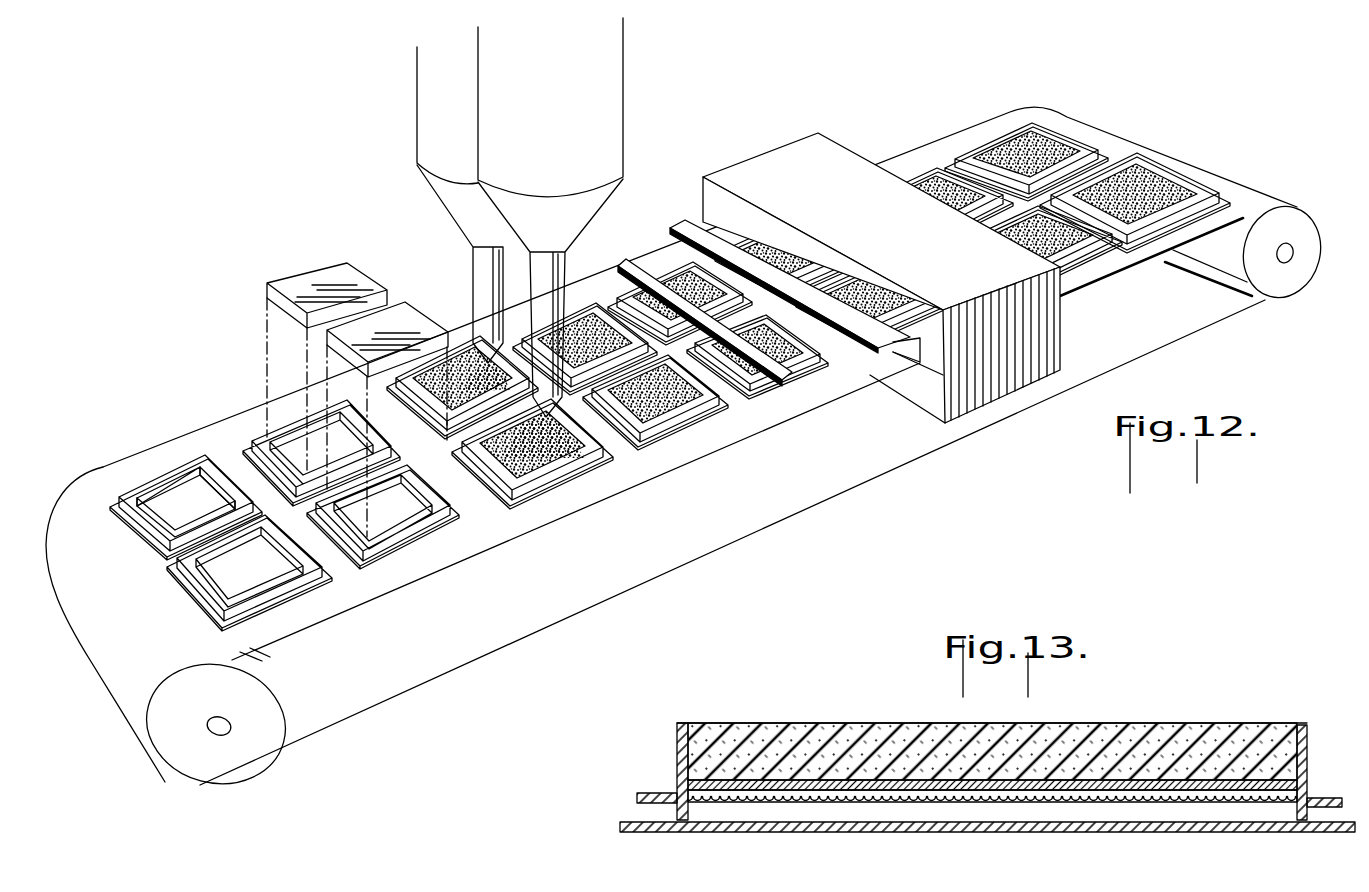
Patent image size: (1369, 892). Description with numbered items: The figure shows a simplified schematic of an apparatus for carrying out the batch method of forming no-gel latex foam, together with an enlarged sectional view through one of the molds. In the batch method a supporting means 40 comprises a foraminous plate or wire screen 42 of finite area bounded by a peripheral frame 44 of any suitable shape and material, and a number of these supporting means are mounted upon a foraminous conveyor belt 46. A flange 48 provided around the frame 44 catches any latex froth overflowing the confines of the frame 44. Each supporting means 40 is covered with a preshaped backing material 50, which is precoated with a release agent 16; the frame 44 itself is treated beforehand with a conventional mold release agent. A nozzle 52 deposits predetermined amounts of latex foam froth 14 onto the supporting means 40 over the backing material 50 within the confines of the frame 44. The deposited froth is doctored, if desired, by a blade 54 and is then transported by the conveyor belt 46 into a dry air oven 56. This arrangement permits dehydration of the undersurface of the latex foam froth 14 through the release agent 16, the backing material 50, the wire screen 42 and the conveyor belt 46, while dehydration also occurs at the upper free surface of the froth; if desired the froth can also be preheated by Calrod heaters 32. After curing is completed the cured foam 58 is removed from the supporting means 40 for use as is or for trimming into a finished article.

In FIG. 12, the latex foam froth 14 is at (557, 457).
In FIG. 13, the release agent 16 is at (1305, 783).
In FIG. 12, the Calrod heaters 32 is at (683, 223).
In FIG. 13, the supporting means 40 is at (668, 750).
In FIG. 12, the wire screen 42 is at (175, 507).
In FIG. 13, the wire screen 42 is at (725, 803).
In FIG. 12, the peripheral frame 44 is at (195, 463).
In FIG. 13, the peripheral frame 44 is at (1305, 737).
In FIG. 12, the conveyor belt 46 is at (667, 477).
In FIG. 13, the conveyor belt 46 is at (857, 832).
In FIG. 12, the flange 48 is at (300, 593).
In FIG. 13, the flange 48 is at (647, 795).
In FIG. 12, the backing material 50 is at (312, 268).
In FIG. 13, the backing material 50 is at (1307, 792).
In FIG. 12, the nozzle 52 is at (538, 300).
In FIG. 12, the blade 54 is at (620, 260).
In FIG. 12, the dry air oven 56 is at (818, 148).
In FIG. 12, the cured foam 58 is at (1067, 143).